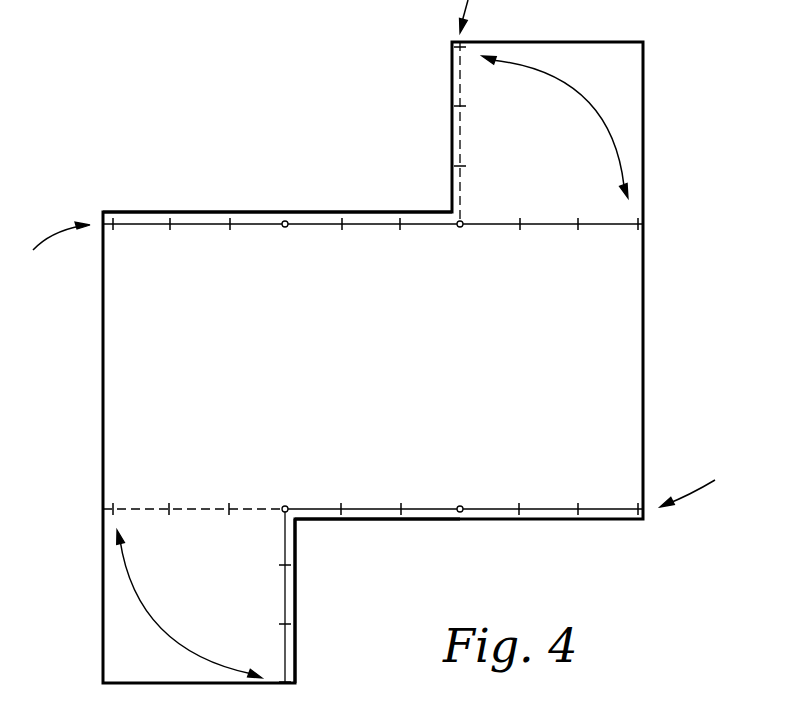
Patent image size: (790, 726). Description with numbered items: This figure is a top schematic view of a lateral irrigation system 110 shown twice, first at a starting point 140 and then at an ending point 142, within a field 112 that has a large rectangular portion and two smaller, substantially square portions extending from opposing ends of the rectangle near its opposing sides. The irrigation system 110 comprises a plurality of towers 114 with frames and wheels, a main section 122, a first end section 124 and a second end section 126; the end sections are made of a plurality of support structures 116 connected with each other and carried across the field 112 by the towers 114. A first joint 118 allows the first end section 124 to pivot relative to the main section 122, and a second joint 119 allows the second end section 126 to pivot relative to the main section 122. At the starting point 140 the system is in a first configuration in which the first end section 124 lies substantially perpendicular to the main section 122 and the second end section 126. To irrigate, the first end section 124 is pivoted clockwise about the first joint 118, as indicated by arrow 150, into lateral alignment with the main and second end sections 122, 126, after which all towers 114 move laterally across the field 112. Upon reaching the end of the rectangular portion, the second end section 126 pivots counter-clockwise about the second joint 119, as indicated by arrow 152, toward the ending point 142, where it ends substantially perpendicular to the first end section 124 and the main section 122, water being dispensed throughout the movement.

The irrigation system 110 is at (381, 270).
The field 112 is at (130, 370).
The towers 114 is at (170, 229).
The support structures 116 is at (137, 229).
The first joint 118 is at (285, 230).
The second joint 119 is at (462, 228).
The main section 122 is at (383, 222).
The first end section 124 is at (201, 222).
The second end section 126 is at (462, 118).
The starting point 140 is at (699, 481).
The ending point 142 is at (237, 138).
The arrow 150 is at (165, 628).
The arrow 152 is at (583, 100).